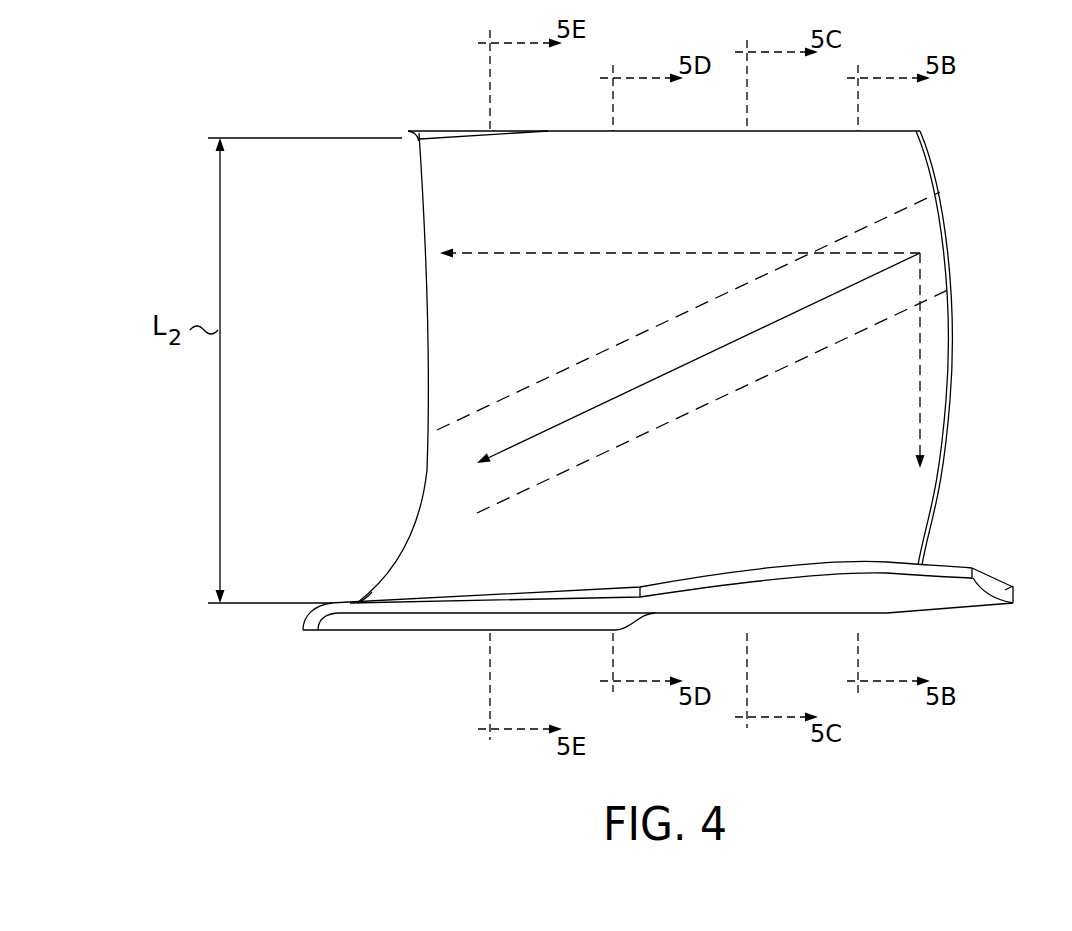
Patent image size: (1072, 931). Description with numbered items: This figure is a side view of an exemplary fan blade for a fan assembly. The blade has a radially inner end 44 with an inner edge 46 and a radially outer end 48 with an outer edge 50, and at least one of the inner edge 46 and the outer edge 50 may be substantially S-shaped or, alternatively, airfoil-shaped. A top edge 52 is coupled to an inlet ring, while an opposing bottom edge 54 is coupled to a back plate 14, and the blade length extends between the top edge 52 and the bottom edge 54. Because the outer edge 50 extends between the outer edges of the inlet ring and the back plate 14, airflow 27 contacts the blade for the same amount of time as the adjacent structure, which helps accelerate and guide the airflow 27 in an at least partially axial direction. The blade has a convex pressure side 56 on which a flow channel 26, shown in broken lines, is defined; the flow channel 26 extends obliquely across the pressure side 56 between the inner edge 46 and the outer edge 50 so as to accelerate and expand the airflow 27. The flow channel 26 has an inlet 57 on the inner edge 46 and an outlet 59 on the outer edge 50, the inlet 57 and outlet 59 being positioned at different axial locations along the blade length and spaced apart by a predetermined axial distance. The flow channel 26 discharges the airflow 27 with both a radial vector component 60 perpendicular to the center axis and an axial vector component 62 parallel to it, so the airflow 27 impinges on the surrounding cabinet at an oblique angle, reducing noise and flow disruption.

The back plate 14 is at (987, 582).
The flow channel 26 is at (562, 389).
The airflow 27 is at (543, 432).
The radially inner end 44 is at (885, 490).
The inner edge 46 is at (956, 307).
The radially outer end 48 is at (442, 193).
The outer edge 50 is at (420, 273).
The top edge 52 is at (548, 131).
The bottom edge 54 is at (360, 602).
The convex pressure side 56 is at (873, 171).
The inlet 57 is at (928, 233).
The outlet 59 is at (442, 483).
The radial vector component 60 is at (608, 253).
The axial vector component 62 is at (922, 362).